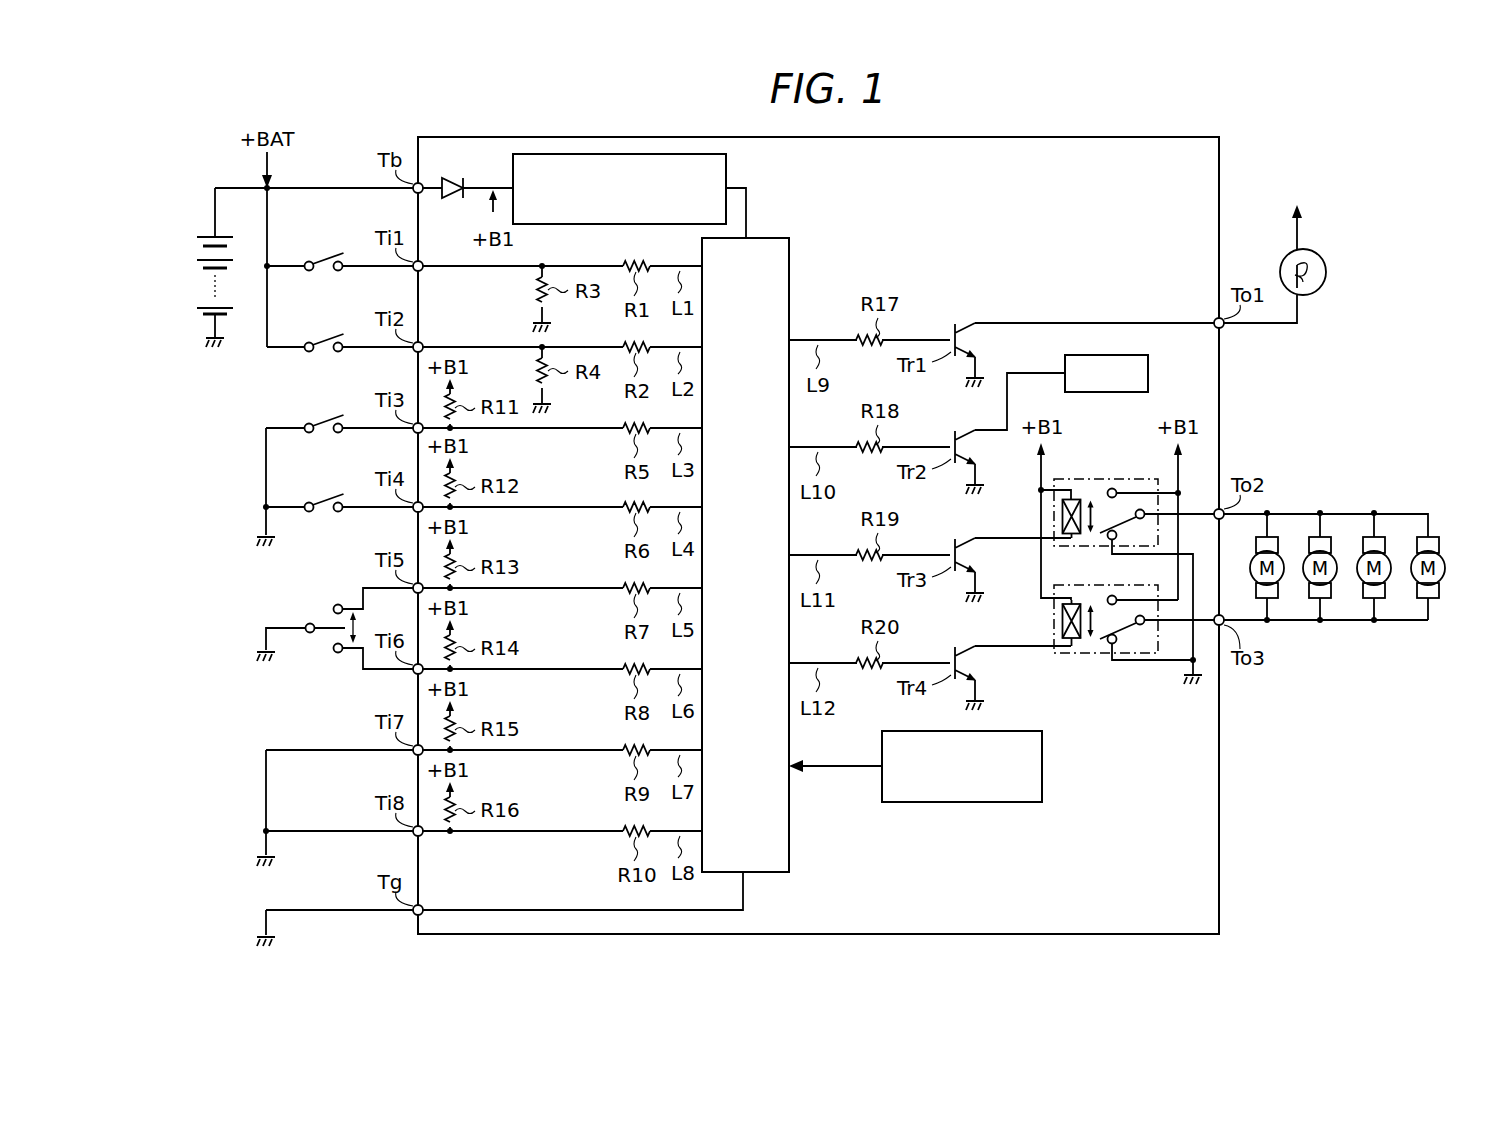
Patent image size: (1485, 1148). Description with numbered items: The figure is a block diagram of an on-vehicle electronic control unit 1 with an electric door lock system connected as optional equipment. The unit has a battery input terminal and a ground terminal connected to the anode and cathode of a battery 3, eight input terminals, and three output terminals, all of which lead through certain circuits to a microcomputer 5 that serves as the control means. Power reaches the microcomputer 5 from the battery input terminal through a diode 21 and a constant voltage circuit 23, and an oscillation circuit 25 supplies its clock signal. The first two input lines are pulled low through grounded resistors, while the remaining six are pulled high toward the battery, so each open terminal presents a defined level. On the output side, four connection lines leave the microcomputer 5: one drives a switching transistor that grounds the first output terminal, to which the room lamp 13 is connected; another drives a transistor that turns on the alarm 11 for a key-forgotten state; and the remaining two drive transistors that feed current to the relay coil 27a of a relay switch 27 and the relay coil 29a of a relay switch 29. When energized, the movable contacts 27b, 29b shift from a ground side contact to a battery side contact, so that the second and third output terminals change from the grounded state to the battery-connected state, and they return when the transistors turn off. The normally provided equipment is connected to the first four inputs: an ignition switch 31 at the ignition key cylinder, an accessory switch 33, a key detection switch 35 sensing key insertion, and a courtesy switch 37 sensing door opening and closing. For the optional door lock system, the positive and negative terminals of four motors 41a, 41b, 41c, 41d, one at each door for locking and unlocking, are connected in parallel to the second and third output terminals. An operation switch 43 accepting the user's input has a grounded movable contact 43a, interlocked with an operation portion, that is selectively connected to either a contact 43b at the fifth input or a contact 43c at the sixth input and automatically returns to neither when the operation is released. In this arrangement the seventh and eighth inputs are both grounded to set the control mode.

The electronic control unit 1 is at (1240, 761).
The battery 3 is at (232, 314).
The microcomputer 5 is at (789, 248).
The alarm 11 is at (1148, 373).
The room lamp 13 is at (1326, 270).
The diode 21 is at (448, 205).
The constant voltage circuit 23 is at (726, 162).
The oscillation circuit 25 is at (1042, 767).
The relay switch 27 is at (1134, 536).
The relay coil 27a is at (1071, 498).
The movable contact 27b is at (1157, 575).
The relay switch 29 is at (1134, 656).
The relay coil 29a is at (1068, 656).
The movable contact 29b is at (1108, 658).
The ignition switch 31 is at (329, 252).
The accessory switch 33 is at (329, 333).
The key detection switch 35 is at (329, 414).
The courtesy switch 37 is at (329, 493).
The motor 41a is at (1277, 543).
The motor 41b is at (1332, 590).
The motor 41c is at (1380, 540).
The motor 41d is at (1418, 590).
The operation switch 43 is at (331, 632).
The movable contact 43a is at (332, 638).
The contact 43b is at (338, 600).
The contact 43c is at (338, 656).